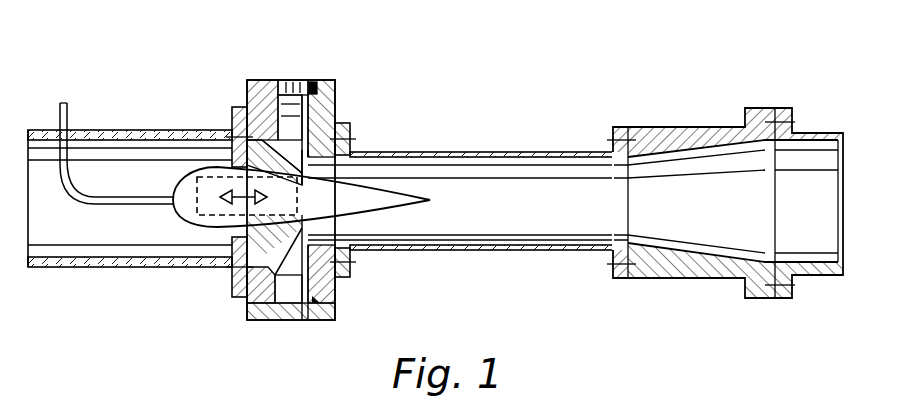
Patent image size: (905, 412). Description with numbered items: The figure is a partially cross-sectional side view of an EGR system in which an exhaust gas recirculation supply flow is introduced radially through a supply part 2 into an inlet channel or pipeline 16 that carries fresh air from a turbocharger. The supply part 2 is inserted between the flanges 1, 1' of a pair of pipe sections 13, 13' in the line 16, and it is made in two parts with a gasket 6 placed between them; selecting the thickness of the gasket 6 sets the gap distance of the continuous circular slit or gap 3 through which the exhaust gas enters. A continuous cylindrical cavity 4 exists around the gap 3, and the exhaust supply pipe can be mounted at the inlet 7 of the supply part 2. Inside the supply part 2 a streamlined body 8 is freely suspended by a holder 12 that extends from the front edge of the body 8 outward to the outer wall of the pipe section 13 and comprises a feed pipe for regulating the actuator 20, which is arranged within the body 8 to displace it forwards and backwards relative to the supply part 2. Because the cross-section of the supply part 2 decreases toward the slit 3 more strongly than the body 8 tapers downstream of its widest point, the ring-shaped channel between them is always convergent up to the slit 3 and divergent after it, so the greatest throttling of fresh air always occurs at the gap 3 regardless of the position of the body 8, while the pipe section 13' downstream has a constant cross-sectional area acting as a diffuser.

The flange 1 is at (221, 117).
The flange 1' is at (308, 190).
The supply part 2 is at (253, 330).
The gap 3 is at (310, 165).
The cavity 4 is at (278, 278).
The gasket 6 is at (313, 84).
The inlet 7 is at (288, 80).
The streamlined body 8 is at (365, 205).
The holder 12 is at (78, 197).
The pipe section 13 is at (130, 222).
The pipe section 13' is at (468, 226).
The inlet channel or pipeline 16 is at (443, 143).
The actuator 20 is at (173, 184).